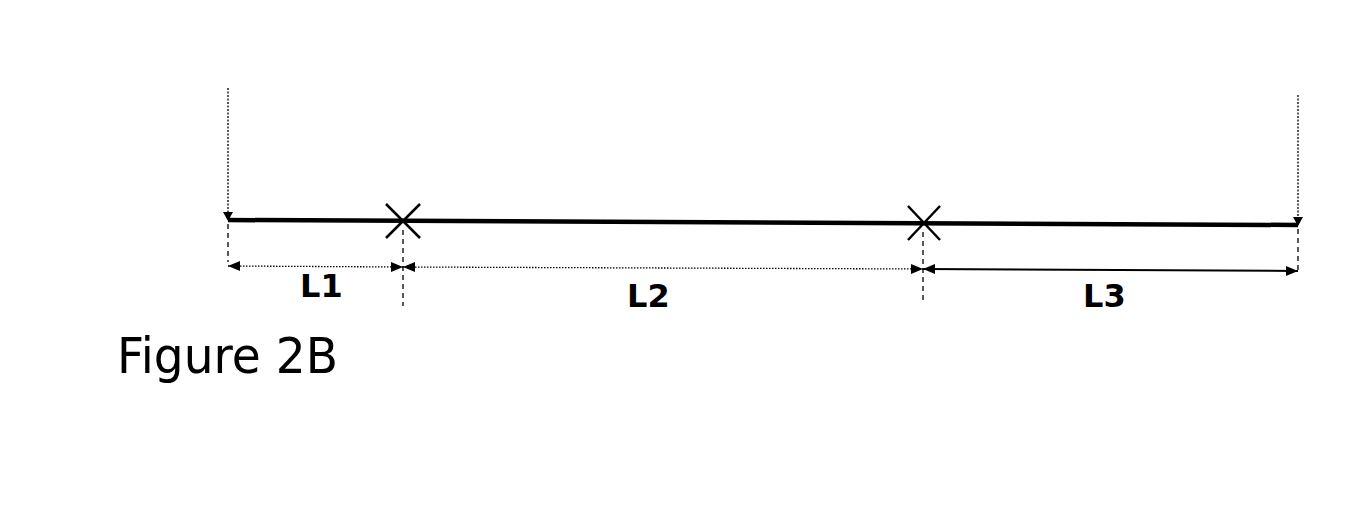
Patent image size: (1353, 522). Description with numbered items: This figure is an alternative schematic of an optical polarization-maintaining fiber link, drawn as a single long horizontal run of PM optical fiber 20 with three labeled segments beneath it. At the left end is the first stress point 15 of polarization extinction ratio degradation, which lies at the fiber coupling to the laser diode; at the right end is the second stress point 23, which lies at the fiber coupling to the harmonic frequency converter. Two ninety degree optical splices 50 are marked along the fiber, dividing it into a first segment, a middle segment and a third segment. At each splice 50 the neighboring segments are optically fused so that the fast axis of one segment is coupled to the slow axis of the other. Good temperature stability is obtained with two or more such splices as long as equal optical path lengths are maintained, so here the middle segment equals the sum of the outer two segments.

The first stress point 15 is at (229, 123).
The PM optical fiber 20 is at (641, 118).
The second stress point 23 is at (1289, 132).
The 90 degree optical splice 50 is at (403, 205).